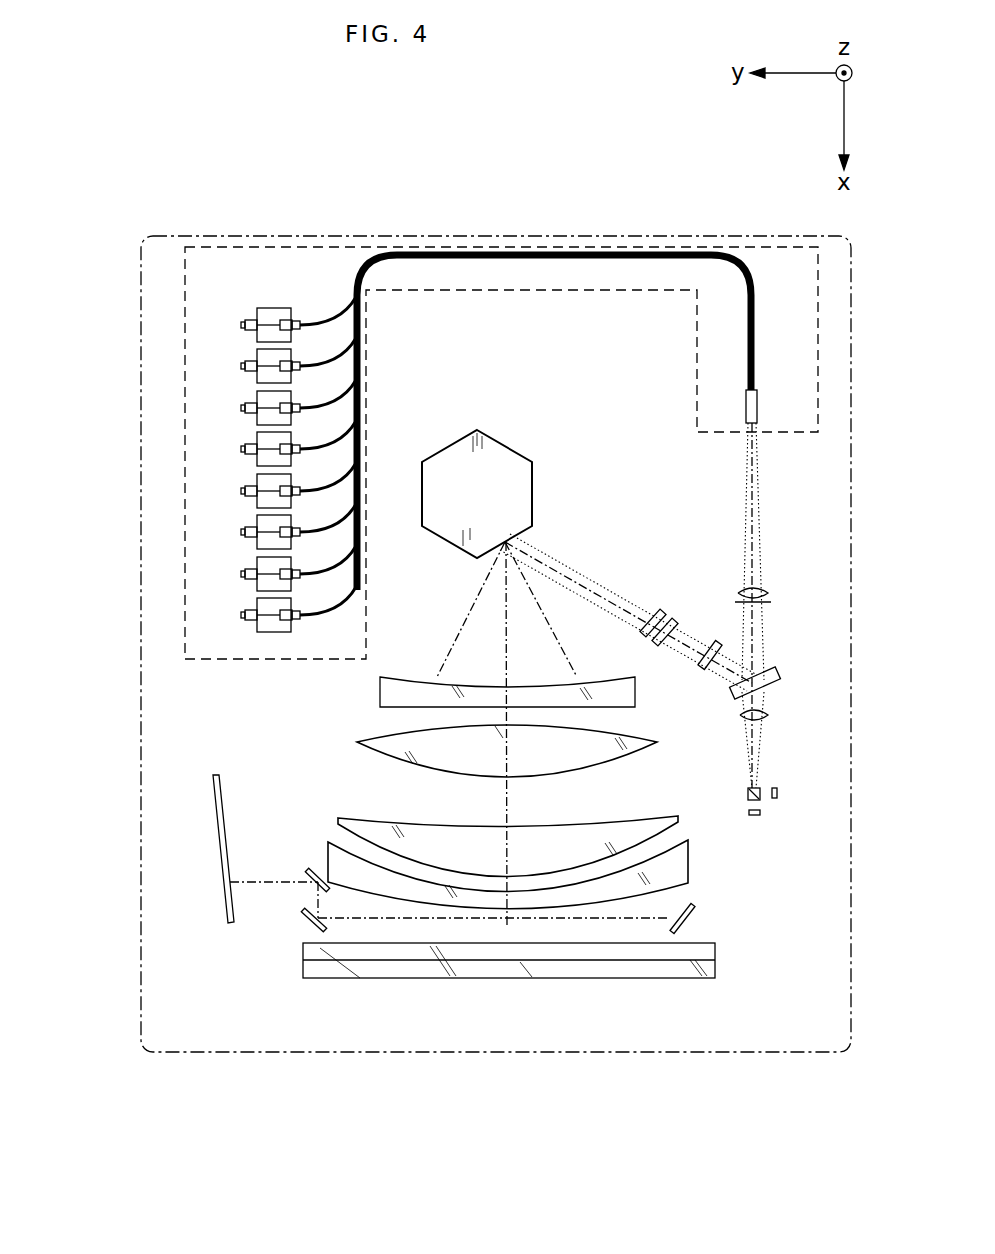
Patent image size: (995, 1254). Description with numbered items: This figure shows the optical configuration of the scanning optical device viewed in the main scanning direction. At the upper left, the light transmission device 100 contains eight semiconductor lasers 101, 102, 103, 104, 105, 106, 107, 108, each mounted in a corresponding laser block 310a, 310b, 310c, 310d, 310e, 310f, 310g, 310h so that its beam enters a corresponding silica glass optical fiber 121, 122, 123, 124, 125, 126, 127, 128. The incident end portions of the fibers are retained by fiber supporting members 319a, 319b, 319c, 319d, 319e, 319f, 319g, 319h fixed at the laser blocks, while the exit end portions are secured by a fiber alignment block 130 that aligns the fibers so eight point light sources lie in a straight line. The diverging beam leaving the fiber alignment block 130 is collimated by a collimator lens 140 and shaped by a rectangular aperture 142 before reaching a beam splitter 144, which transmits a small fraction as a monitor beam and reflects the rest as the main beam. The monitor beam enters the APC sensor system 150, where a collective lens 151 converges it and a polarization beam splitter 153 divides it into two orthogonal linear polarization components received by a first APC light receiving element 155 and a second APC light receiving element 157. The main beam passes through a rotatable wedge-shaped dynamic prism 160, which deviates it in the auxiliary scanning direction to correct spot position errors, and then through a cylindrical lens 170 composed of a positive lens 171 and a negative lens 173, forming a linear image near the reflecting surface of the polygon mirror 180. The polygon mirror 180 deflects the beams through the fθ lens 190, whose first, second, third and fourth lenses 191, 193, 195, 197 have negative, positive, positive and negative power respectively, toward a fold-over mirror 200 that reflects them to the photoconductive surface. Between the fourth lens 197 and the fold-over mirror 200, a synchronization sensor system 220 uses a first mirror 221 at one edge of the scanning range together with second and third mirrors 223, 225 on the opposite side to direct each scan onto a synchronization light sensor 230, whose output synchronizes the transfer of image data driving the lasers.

The light transmission device 100 is at (612, 291).
The semiconductor laser 101 is at (247, 613).
The semiconductor laser 102 is at (247, 572).
The semiconductor laser 103 is at (247, 530).
The semiconductor laser 104 is at (247, 489).
The semiconductor laser 105 is at (247, 447).
The semiconductor laser 106 is at (247, 406).
The semiconductor laser 107 is at (247, 364).
The semiconductor laser 108 is at (247, 323).
The optical fiber 121 is at (359, 611).
The optical fiber 122 is at (359, 570).
The optical fiber 123 is at (359, 528).
The optical fiber 124 is at (359, 487).
The optical fiber 125 is at (359, 445).
The optical fiber 126 is at (359, 404).
The optical fiber 127 is at (359, 362).
The optical fiber 128 is at (359, 321).
The fiber alignment block 130 is at (782, 400).
The collimator lens 140 is at (769, 590).
The aperture 142 is at (772, 603).
The beam splitter 144 is at (778, 676).
The APC sensor system 150 is at (833, 690).
The collective lens 151 is at (770, 716).
The polarization beam splitter 153 is at (761, 789).
The first APC light receiving element 155 is at (756, 816).
The second APC light receiving element 157 is at (803, 808).
The dynamic prism 160 is at (705, 669).
The cylindrical lens 170 is at (715, 558).
The lens 171 is at (668, 620).
The lens 173 is at (655, 610).
The polygon mirror 180 is at (496, 441).
The fθ lens 190 is at (272, 837).
The first lens 191 is at (380, 695).
The second lens 193 is at (360, 742).
The third lens 195 is at (340, 818).
The fourth lens 197 is at (332, 850).
The fold-over mirror 200 is at (308, 975).
The synchronization sensor system 220 is at (625, 1033).
The first mirror 221 is at (672, 930).
The second mirror 223 is at (327, 929).
The third mirror 225 is at (330, 892).
The synchronization light sensor 230 is at (236, 912).
The laser block 310a is at (258, 625).
The laser block 310b is at (258, 584).
The laser block 310c is at (258, 542).
The laser block 310d is at (258, 501).
The laser block 310e is at (258, 459).
The laser block 310f is at (258, 418).
The laser block 310g is at (258, 376).
The laser block 310h is at (258, 335).
The fiber supporting member 319a is at (306, 613).
The fiber supporting member 319b is at (306, 572).
The fiber supporting member 319c is at (306, 530).
The fiber supporting member 319d is at (306, 489).
The fiber supporting member 319e is at (306, 447).
The fiber supporting member 319f is at (306, 406).
The fiber supporting member 319g is at (306, 364).
The fiber supporting member 319h is at (306, 323).